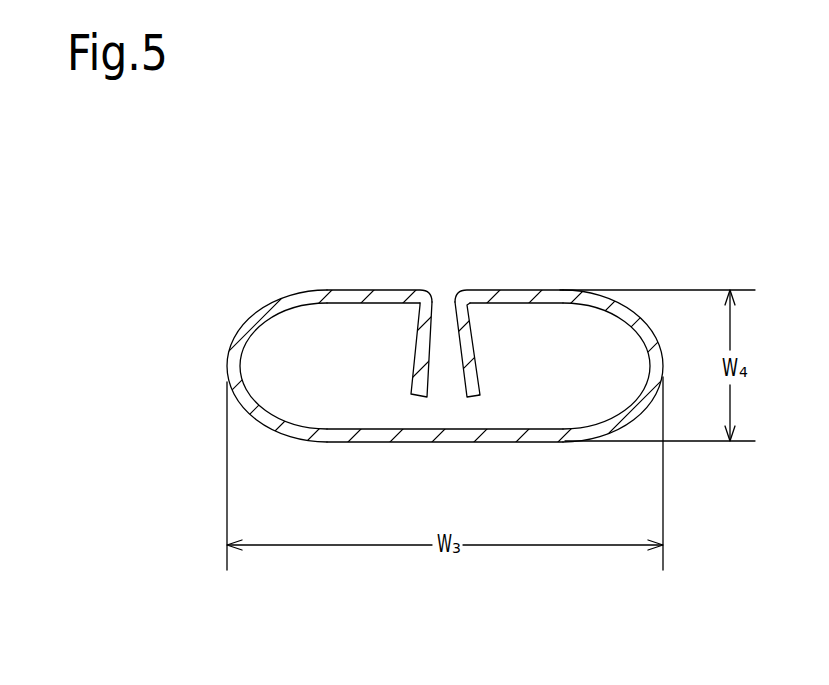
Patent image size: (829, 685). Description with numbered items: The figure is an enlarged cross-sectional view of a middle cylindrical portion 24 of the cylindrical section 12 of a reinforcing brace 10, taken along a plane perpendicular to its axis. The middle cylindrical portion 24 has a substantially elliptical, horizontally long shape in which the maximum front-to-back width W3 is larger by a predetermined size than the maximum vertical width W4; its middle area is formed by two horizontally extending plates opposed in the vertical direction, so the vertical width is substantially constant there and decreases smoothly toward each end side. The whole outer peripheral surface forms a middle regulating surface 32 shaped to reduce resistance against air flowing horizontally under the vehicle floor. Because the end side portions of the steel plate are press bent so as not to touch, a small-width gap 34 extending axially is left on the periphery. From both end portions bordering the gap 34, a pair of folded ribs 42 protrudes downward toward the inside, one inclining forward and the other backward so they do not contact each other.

The reinforcing brace 10 is at (441, 343).
The cylindrical section 12 is at (562, 251).
The middle cylindrical portion 24 is at (548, 290).
The middle regulating surface 32 is at (240, 330).
The gap 34 is at (445, 298).
The folded rib 42 is at (423, 357).